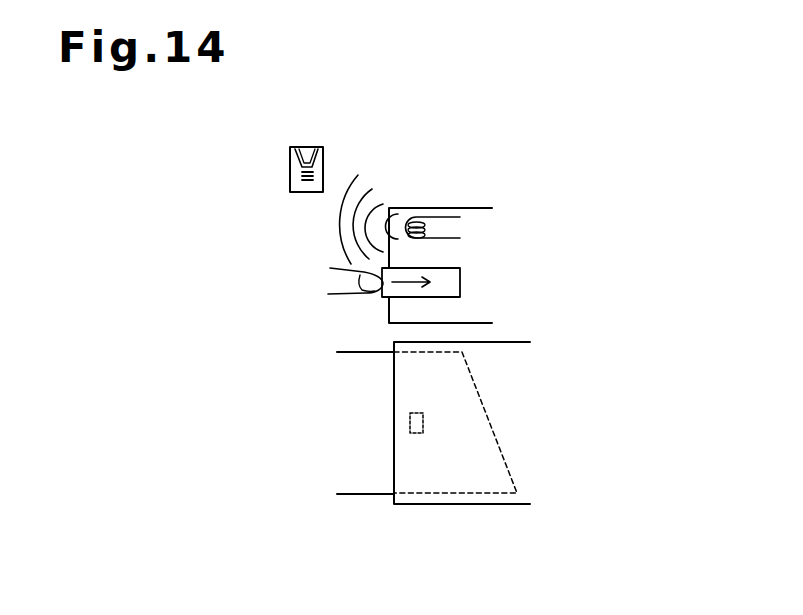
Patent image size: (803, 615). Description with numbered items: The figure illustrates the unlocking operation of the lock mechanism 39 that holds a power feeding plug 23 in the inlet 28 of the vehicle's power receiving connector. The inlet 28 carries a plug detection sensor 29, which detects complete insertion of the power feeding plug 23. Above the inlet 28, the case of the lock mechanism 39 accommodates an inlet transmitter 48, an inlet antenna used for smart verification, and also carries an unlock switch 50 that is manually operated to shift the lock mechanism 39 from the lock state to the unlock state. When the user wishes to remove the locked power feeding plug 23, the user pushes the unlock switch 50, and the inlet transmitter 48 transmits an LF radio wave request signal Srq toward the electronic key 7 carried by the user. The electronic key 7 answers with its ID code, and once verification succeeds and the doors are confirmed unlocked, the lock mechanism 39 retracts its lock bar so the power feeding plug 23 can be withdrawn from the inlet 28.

The electronic key 7 is at (290, 162).
The request signal Srq is at (343, 241).
The lock mechanism 39 is at (480, 208).
The inlet transmitter 48 is at (436, 214).
The unlock switch 50 is at (402, 297).
The power feeding plug 23 is at (352, 496).
The inlet 28 is at (457, 506).
The plug detection sensor 29 is at (424, 436).